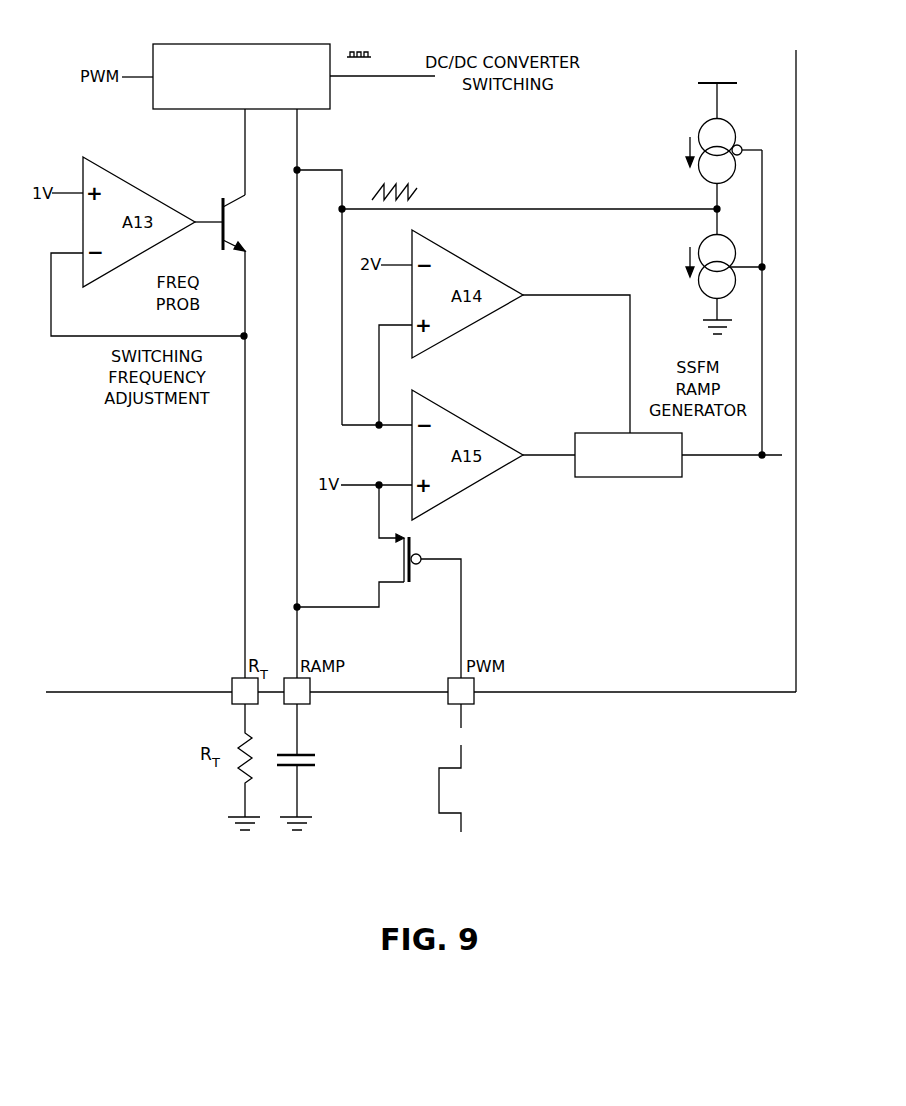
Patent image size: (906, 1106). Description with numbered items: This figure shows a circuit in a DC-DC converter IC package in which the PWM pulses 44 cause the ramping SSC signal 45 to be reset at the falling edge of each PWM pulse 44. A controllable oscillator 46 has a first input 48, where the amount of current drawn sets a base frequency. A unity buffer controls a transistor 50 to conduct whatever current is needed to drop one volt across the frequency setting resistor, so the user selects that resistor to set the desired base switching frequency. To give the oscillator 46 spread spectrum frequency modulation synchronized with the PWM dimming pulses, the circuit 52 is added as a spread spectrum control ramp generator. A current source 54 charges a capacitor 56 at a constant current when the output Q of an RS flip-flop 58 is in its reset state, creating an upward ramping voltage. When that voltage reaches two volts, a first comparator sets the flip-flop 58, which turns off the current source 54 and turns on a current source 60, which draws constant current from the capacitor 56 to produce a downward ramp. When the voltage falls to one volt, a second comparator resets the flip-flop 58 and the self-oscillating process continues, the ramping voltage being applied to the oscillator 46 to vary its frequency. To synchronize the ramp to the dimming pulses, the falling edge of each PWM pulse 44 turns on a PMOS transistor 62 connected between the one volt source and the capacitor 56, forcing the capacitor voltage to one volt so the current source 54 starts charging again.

The PWM pulses 44 is at (438, 793).
The ramping SSC signal 45 is at (398, 181).
The controllable oscillator 46 is at (238, 44).
The first input 48 is at (241, 111).
The transistor 50 is at (242, 196).
The circuit 52 is at (711, 259).
The current source 54 is at (738, 132).
The capacitor 56 is at (320, 766).
The RS flip-flop 58 is at (630, 479).
The current source 60 is at (728, 234).
The PMOS transistor 62 is at (393, 585).